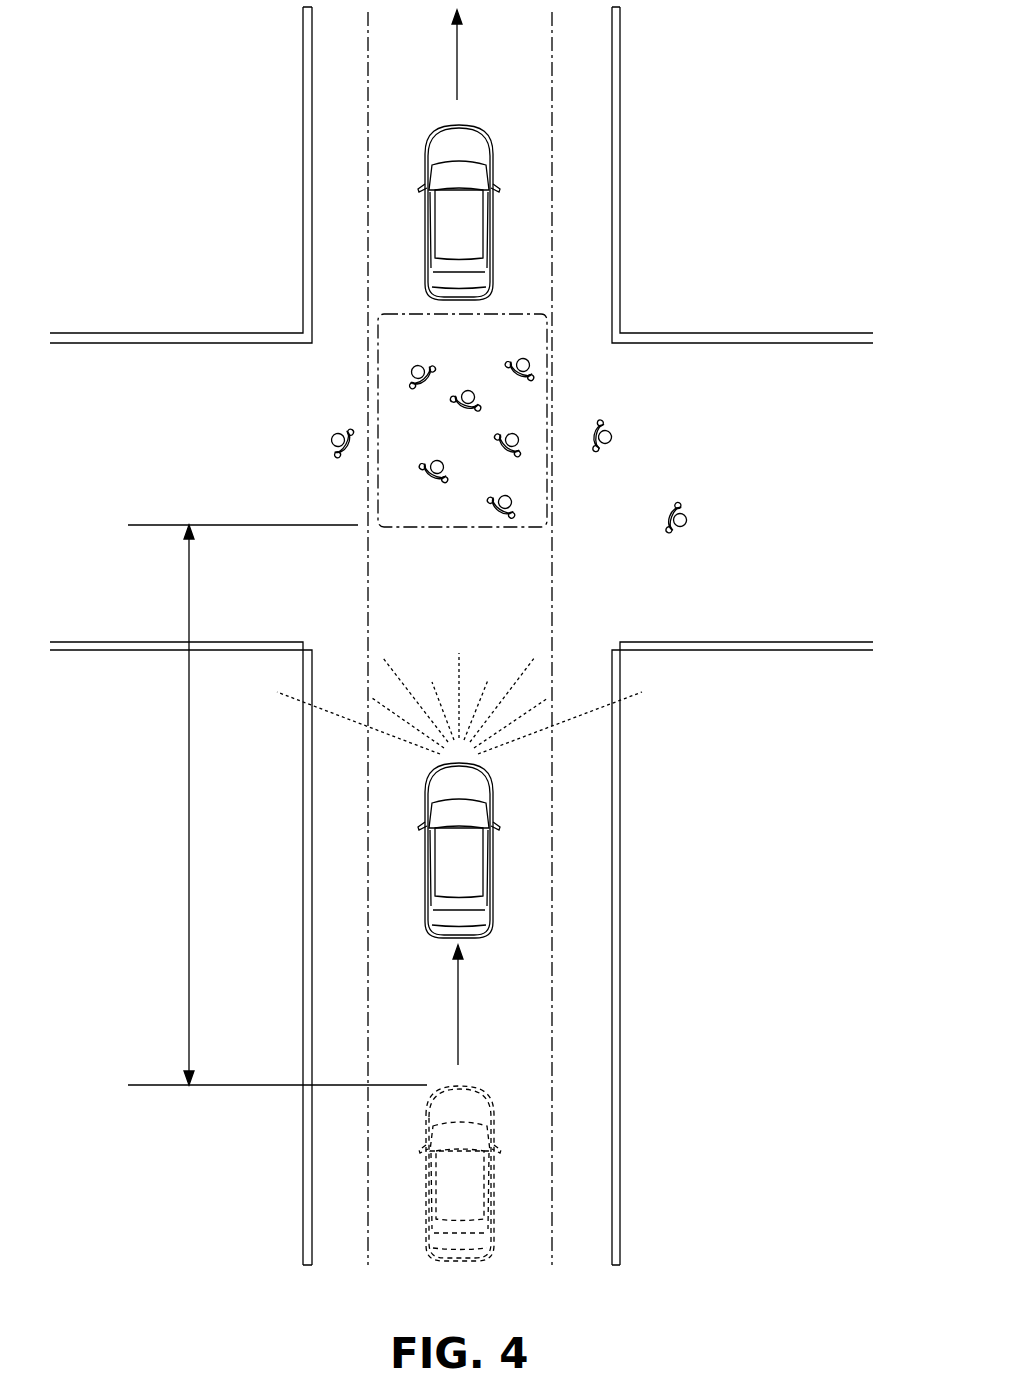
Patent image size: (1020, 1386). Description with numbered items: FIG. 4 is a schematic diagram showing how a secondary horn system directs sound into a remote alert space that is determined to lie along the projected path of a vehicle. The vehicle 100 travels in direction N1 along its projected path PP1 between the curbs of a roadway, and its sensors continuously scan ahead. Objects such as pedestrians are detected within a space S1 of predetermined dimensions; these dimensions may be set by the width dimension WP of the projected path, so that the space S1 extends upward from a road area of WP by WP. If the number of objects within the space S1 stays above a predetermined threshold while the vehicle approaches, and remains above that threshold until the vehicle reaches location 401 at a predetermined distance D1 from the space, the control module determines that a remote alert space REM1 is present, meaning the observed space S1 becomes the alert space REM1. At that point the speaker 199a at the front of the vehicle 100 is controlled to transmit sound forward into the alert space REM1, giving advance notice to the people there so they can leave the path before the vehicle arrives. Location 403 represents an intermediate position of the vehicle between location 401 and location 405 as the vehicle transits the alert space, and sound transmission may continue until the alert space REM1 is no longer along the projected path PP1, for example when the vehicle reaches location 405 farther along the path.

The vehicle 100 is at (478, 242).
The location 401 is at (495, 1163).
The location 403 is at (490, 847).
The location 405 is at (488, 208).
The speaker 199a is at (459, 755).
The width dimension of the projected path WP is at (252, 42).
The remote alert space REM1 is at (400, 313).
The space S1 is at (366, 380).
The projected path PP1 is at (358, 1130).
The direction N1 is at (474, 1005).
The predetermined distance D1 is at (277, 805).